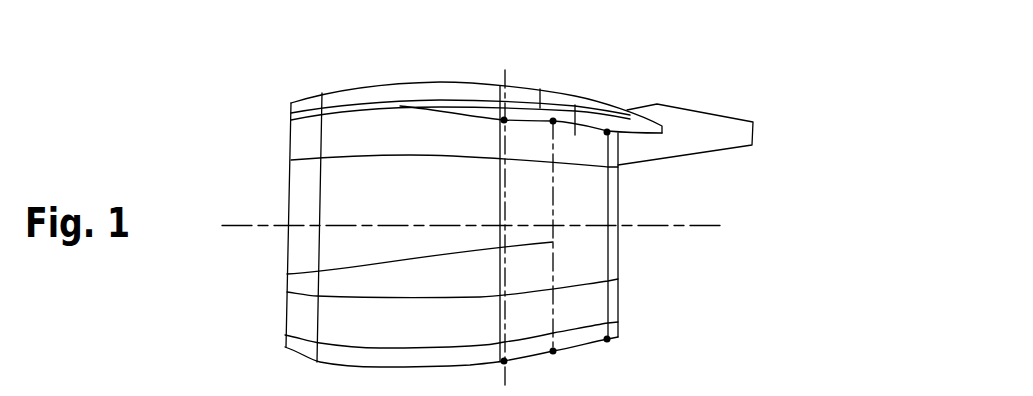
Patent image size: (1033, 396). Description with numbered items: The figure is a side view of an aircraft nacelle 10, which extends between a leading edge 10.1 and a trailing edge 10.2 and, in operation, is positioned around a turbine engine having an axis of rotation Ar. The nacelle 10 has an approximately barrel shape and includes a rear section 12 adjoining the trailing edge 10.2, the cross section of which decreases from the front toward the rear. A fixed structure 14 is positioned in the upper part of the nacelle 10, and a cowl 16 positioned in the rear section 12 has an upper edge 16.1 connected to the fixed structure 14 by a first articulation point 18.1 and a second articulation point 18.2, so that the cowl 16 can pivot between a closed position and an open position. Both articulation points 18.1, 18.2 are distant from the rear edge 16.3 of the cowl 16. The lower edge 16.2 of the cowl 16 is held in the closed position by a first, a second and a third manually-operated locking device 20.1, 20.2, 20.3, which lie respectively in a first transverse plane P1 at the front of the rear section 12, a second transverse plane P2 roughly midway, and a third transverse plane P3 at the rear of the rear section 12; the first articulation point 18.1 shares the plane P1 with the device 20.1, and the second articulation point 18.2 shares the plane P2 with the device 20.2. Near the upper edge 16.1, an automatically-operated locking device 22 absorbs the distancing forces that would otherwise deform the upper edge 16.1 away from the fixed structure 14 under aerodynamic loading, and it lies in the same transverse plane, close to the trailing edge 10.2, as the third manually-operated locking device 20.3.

The aircraft nacelle 10 is at (328, 65).
The leading edge 10.1 is at (290, 152).
The trailing edge 10.2 is at (618, 263).
The rear section 12 is at (603, 296).
The fixed structure 14 is at (515, 78).
The cowl 16 is at (607, 206).
The upper edge 16.1 is at (607, 132).
The lower edge 16.2 is at (585, 346).
The rear edge 16.3 is at (618, 194).
The first articulation point 18.1 is at (504, 120).
The second articulation point 18.2 is at (553, 121).
The first manually-operated locking device 20.1 is at (504, 361).
The second manually-operated locking device 20.2 is at (553, 351).
The third manually-operated locking device 20.3 is at (607, 339).
The automatically-operated locking device 22 is at (620, 103).
The first transverse plane P1 is at (502, 186).
The second transverse plane P2 is at (287, 274).
The third transverse plane P3 is at (612, 240).
The axis of rotation Ar is at (245, 225).